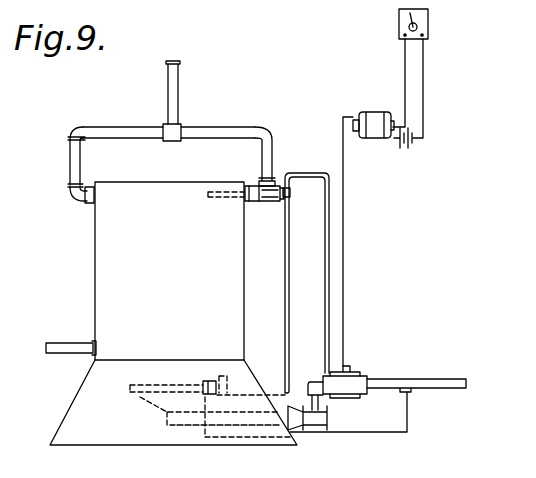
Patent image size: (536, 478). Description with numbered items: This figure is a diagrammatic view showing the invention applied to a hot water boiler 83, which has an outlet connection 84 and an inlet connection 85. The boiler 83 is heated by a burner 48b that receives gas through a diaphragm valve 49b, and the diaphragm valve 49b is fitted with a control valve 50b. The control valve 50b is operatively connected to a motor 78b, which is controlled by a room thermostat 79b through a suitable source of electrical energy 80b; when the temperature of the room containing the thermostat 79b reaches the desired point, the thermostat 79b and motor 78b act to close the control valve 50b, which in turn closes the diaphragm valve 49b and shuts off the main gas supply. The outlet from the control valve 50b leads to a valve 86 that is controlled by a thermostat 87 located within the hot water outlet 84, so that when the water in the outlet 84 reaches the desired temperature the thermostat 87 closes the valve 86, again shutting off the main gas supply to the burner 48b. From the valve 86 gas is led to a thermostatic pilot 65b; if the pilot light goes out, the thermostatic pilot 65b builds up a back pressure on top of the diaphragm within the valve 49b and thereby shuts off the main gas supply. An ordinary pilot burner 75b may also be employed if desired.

The hot water boiler 83 is at (169, 271).
The outlet connection 84 is at (269, 201).
The inlet connection 85 is at (62, 354).
The valve 86 is at (291, 194).
The thermostat 87 is at (222, 198).
The burner 48b is at (158, 393).
The diaphragm valve 49b is at (369, 380).
The control valve 50b is at (346, 368).
The thermostatic pilot 65b is at (223, 374).
The pilot burner 75b is at (203, 388).
The motor 78b is at (375, 117).
The room thermostat 79b is at (429, 18).
The source of electrical energy 80b is at (407, 144).